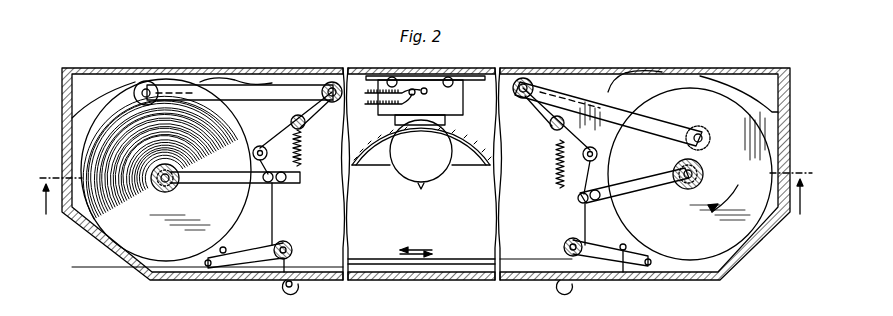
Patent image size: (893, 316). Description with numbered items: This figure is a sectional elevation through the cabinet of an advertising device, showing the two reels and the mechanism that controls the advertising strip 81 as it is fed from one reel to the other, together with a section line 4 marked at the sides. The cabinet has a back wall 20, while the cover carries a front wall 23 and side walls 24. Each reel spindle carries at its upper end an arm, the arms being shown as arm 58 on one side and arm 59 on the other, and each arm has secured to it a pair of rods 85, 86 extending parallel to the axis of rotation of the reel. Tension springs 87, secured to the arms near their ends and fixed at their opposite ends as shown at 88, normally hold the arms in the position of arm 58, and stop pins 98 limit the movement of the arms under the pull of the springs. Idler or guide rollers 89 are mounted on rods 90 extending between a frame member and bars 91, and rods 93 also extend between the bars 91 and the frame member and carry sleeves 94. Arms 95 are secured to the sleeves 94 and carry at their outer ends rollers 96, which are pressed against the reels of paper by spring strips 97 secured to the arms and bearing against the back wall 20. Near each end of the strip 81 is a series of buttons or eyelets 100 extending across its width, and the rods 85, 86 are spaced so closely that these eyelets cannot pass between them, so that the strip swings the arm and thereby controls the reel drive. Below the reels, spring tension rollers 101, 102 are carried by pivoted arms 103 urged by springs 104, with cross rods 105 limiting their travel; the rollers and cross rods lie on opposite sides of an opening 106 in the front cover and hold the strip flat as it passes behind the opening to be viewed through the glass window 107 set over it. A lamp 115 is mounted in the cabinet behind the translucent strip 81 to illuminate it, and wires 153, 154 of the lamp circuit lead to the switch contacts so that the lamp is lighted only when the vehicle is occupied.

The section line 4 is at (426, 205).
The back wall 20 is at (298, 71).
The front wall 23 is at (206, 281).
The side walls 24 is at (64, 140).
The arm 58 is at (226, 186).
The arm 59 is at (641, 192).
The strip 81 is at (452, 258).
The rod 85 is at (266, 184).
The rod 86 is at (282, 186).
The tension springs 87 is at (304, 160).
The fixed spring end 88 is at (305, 127).
The idler rollers 89 is at (261, 146).
The rods 90 is at (258, 148).
The bars 91 is at (296, 121).
The rods 93 is at (332, 103).
The sleeves 94 is at (334, 86).
The arms 95 is at (235, 90).
The rollers 96 is at (146, 82).
The spring strips 97 is at (262, 82).
The stop pins 98 is at (293, 147).
The buttons or eyelets 100 is at (182, 162).
The spring tension roller 101 is at (566, 242).
The spring tension roller 102 is at (285, 246).
The pivoted arms 103 is at (240, 257).
The springs 104 is at (270, 262).
The cross rods 105 is at (290, 286).
The opening 106 is at (530, 281).
The glass window 107 is at (478, 281).
The lamp 115 is at (461, 146).
The wire 153 is at (362, 90).
The wire 154 is at (366, 100).